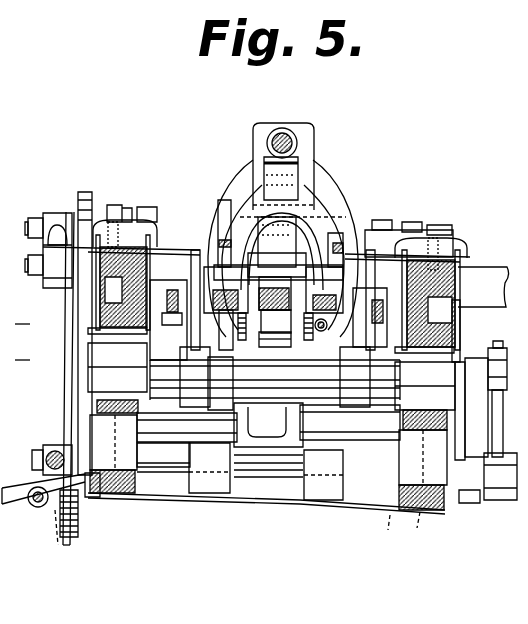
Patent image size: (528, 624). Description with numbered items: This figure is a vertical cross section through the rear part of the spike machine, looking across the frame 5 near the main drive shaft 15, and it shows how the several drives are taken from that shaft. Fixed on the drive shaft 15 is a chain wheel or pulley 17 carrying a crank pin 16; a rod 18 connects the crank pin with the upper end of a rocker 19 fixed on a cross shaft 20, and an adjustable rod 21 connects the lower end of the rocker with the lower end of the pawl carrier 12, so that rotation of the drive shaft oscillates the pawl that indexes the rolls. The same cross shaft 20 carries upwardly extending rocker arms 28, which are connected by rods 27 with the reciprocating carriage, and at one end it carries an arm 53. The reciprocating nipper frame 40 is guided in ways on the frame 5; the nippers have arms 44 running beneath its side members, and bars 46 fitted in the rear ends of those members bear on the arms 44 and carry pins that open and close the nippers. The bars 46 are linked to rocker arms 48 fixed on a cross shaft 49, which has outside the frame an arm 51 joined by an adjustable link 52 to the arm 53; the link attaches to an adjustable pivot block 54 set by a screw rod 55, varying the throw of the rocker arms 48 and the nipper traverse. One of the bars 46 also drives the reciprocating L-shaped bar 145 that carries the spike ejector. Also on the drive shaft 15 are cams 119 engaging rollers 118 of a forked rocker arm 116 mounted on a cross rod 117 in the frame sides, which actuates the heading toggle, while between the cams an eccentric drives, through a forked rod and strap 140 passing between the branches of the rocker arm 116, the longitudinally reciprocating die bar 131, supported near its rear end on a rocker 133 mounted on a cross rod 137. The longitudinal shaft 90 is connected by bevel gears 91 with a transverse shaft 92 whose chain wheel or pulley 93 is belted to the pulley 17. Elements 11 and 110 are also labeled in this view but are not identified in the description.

The frame 5 is at (272, 378).
The base 11 is at (15, 376).
The pawl carrier 12 is at (15, 313).
The main drive shaft 15 is at (483, 287).
The crank pin 16 is at (33, 225).
The chain wheel or pulley 17 is at (89, 187).
The rod 18 is at (55, 238).
The rocker 19 is at (70, 312).
The cross shaft 20 is at (271, 376).
The adjustable rod 21 is at (45, 448).
The rods 27 is at (170, 298).
The rocker arms 28 is at (186, 352).
The nipper frame 40 is at (212, 297).
The arms 44 is at (271, 320).
The bars 46 is at (214, 292).
The rocker arms 48 is at (228, 337).
The cross shaft 49 is at (386, 412).
The arm 51 is at (464, 502).
The adjustable link 52 is at (500, 500).
The arm 53 is at (477, 431).
The adjustable pivot block 54 is at (480, 504).
The screw rod 55 is at (494, 355).
The longitudinal shaft 90 is at (37, 508).
The bevel gears 91 is at (40, 491).
The transverse shaft 92 is at (102, 497).
The chain wheel or pulley 93 is at (79, 530).
The pin 110 is at (284, 133).
The forked rocker arm 116 is at (258, 165).
The cross shaft or rod 117 is at (163, 457).
The rollers 118 is at (232, 245).
The cams 119 is at (222, 199).
The longitudinally reciprocating bar 131 is at (278, 299).
The rocker 133 is at (275, 380).
The cross shaft or rod 137 is at (268, 423).
The forked rod and strap 140 is at (285, 227).
The reciprocating L-shaped bar 145 is at (273, 345).